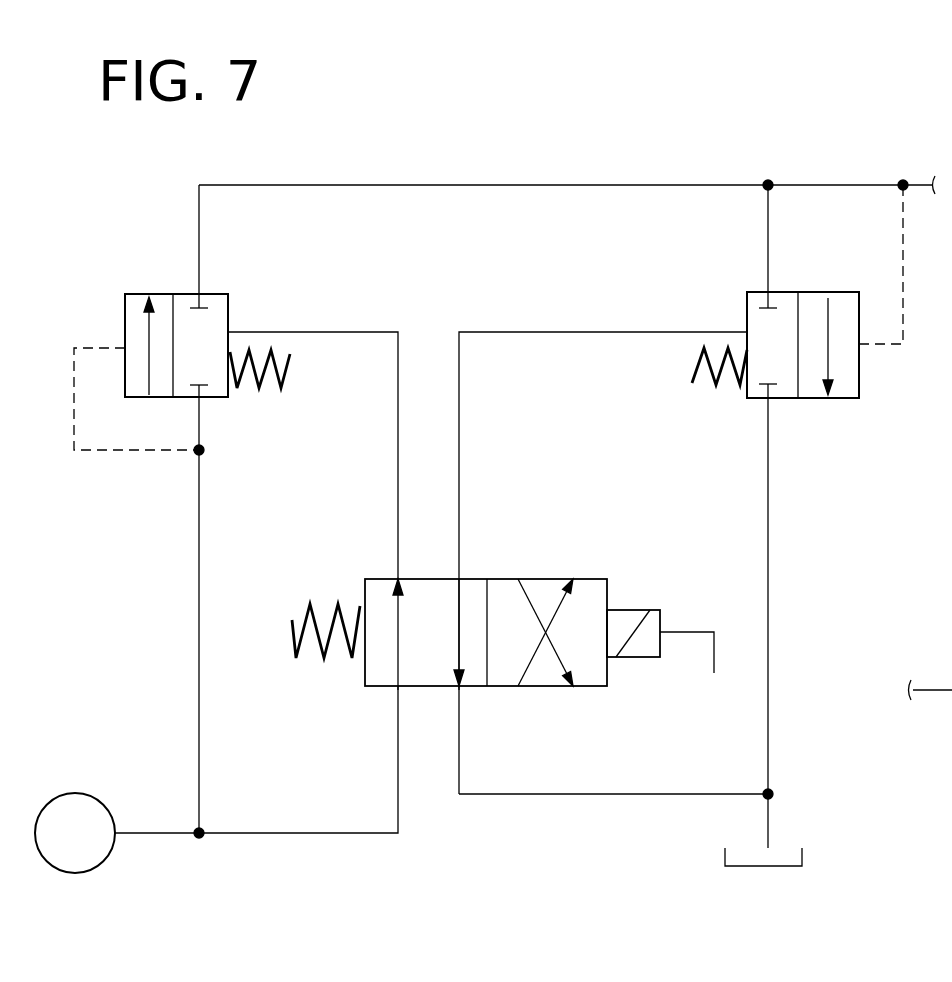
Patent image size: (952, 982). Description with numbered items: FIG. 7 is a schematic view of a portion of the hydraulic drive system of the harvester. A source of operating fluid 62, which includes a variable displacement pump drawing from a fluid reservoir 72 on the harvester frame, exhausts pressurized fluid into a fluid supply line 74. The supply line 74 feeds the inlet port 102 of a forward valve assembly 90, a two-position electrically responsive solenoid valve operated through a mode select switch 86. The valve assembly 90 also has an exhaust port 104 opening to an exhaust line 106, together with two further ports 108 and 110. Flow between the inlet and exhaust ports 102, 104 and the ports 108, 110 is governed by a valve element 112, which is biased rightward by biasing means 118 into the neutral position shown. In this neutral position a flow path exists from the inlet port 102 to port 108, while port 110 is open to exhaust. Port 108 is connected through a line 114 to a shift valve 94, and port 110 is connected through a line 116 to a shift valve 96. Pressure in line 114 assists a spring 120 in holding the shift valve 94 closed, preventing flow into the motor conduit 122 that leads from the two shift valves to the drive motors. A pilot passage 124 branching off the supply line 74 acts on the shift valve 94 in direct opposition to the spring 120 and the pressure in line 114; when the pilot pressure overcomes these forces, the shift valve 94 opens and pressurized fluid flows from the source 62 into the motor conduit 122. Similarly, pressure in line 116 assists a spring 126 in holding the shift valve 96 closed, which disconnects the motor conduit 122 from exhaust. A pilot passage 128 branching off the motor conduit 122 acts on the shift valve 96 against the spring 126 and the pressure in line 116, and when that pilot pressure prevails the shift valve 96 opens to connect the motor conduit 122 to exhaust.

The source of operating fluid 62 is at (93, 790).
The fluid reservoir 72 is at (757, 860).
The fluid supply line 74 is at (199, 632).
The switch 86 is at (673, 681).
The forward valve assembly 90 is at (472, 623).
The shift valve 94 is at (237, 320).
The shift valve 96 is at (732, 314).
The inlet port 102 is at (397, 688).
The exhaust port 104 is at (460, 688).
The exhaust line 106 is at (553, 795).
The port 108 is at (397, 577).
The port 110 is at (460, 578).
The valve element 112 is at (592, 598).
The line 114 is at (398, 453).
The line 116 is at (459, 458).
The biasing means 118 is at (297, 640).
The spring 120 is at (281, 372).
The motor conduit 122 is at (497, 185).
The pilot passage 124 is at (116, 452).
The spring 126 is at (697, 367).
The pilot passage 128 is at (893, 347).